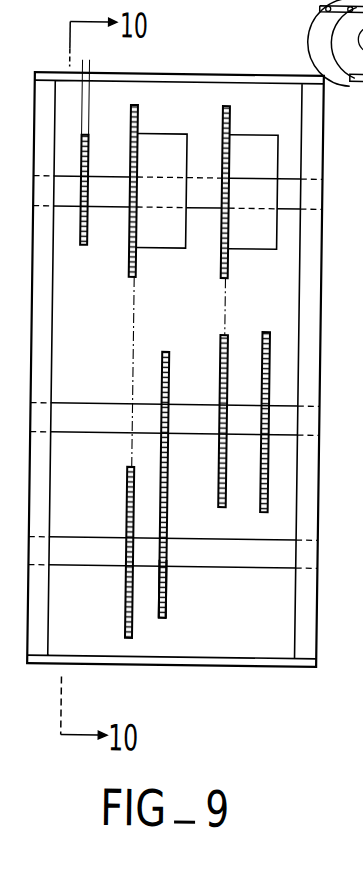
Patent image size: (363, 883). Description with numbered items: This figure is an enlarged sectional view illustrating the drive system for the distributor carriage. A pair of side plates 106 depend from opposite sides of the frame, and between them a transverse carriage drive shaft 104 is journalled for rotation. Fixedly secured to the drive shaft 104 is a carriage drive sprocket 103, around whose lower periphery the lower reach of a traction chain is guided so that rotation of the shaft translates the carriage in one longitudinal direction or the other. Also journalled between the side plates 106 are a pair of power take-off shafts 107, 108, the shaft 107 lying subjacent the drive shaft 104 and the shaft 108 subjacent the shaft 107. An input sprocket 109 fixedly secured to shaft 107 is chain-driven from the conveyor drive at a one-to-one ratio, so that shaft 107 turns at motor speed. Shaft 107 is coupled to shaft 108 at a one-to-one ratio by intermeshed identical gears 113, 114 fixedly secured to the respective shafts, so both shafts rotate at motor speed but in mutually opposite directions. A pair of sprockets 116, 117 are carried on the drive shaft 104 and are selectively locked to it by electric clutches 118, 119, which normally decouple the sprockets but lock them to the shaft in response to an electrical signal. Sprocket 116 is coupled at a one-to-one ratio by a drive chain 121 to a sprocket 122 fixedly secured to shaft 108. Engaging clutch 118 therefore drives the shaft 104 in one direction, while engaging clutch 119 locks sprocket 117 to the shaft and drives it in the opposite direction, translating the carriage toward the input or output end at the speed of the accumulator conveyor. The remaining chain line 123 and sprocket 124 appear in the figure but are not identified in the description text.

The carriage drive sprocket 103 is at (85, 139).
The transverse drive shaft 104 is at (116, 205).
The side plates 106 is at (46, 323).
The power take-off shaft 107 is at (90, 425).
The power take-off shaft 108 is at (88, 544).
The input sprocket 109 is at (264, 489).
The gear 113 is at (163, 352).
The gear 114 is at (170, 578).
The sprocket 116 is at (226, 111).
The sprocket 117 is at (134, 112).
The electric clutch 118 is at (246, 239).
The electric clutch 119 is at (163, 237).
The drive chain 121 is at (225, 297).
The sprocket 122 is at (224, 507).
The axis line 123 is at (134, 298).
The strip 124 is at (135, 629).